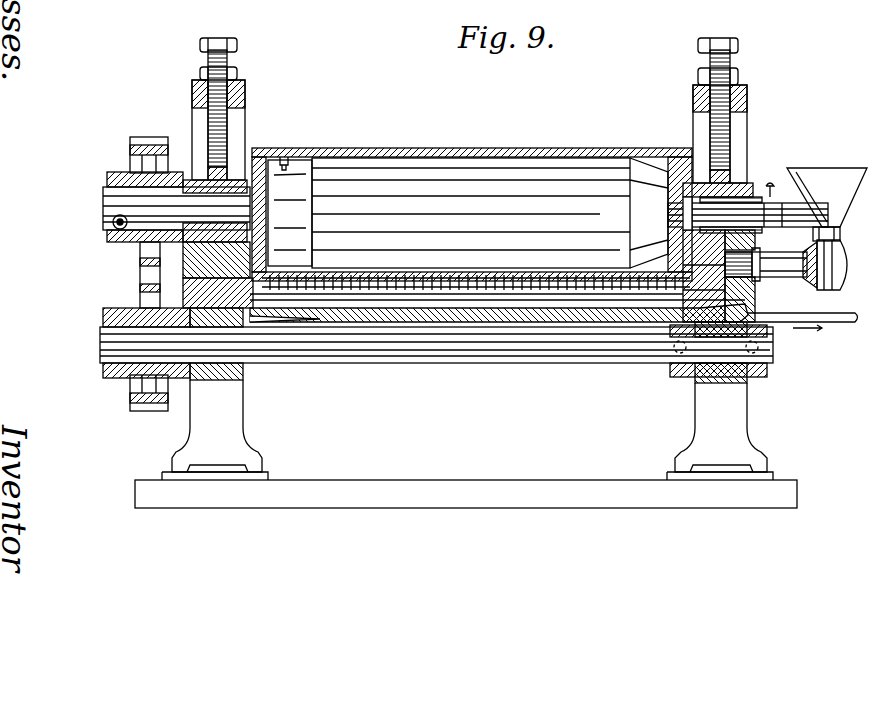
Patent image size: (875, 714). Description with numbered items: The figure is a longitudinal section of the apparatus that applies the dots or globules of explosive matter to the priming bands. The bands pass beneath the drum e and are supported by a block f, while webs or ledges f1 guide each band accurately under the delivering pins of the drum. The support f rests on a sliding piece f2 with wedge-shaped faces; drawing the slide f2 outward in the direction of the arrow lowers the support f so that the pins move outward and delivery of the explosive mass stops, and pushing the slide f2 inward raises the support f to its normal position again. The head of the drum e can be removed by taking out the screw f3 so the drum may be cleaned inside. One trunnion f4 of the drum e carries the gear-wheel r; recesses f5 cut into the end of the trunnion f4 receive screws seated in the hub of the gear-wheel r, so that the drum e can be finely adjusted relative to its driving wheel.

The drum e is at (488, 180).
The support block f is at (298, 302).
The webs or ledges f1 is at (362, 290).
The sliding piece f2 is at (640, 320).
The screw f3 is at (284, 160).
The trunnion f4 is at (112, 195).
The recesses f5 is at (113, 225).
The gear-wheel r is at (135, 296).